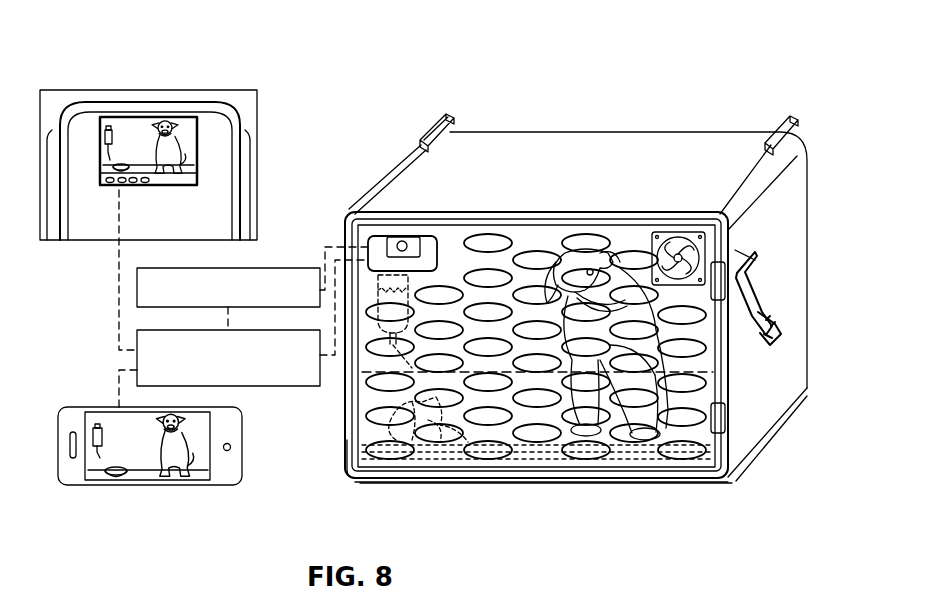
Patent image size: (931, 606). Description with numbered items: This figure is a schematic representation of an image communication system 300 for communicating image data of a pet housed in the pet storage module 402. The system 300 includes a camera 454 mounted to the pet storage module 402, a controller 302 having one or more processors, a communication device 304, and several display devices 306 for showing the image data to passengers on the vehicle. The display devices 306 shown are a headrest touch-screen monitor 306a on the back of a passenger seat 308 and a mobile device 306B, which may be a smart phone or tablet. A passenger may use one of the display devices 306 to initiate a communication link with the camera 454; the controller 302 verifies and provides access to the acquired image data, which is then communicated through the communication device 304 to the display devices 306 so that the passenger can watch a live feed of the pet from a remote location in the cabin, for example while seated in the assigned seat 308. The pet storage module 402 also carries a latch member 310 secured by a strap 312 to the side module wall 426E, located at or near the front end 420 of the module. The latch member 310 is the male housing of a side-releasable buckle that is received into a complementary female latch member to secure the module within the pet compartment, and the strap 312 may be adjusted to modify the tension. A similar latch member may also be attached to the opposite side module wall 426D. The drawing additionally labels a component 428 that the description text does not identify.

The image communication system 300 is at (297, 88).
The controller 302 is at (268, 268).
The communication device 304 is at (297, 387).
The display devices 306 is at (130, 110).
The headrest touch-screen monitor 306a is at (167, 122).
The mobile device 306B is at (145, 477).
The passenger seat 308 is at (210, 153).
The latch member 310 is at (785, 338).
The strap 312 is at (760, 282).
The pet storage module 402 is at (367, 119).
The front end 420 is at (724, 485).
The side module wall 426D is at (345, 425).
The side module wall 426E is at (748, 377).
The perforated interior wall 428 is at (449, 230).
The camera 454 is at (374, 236).